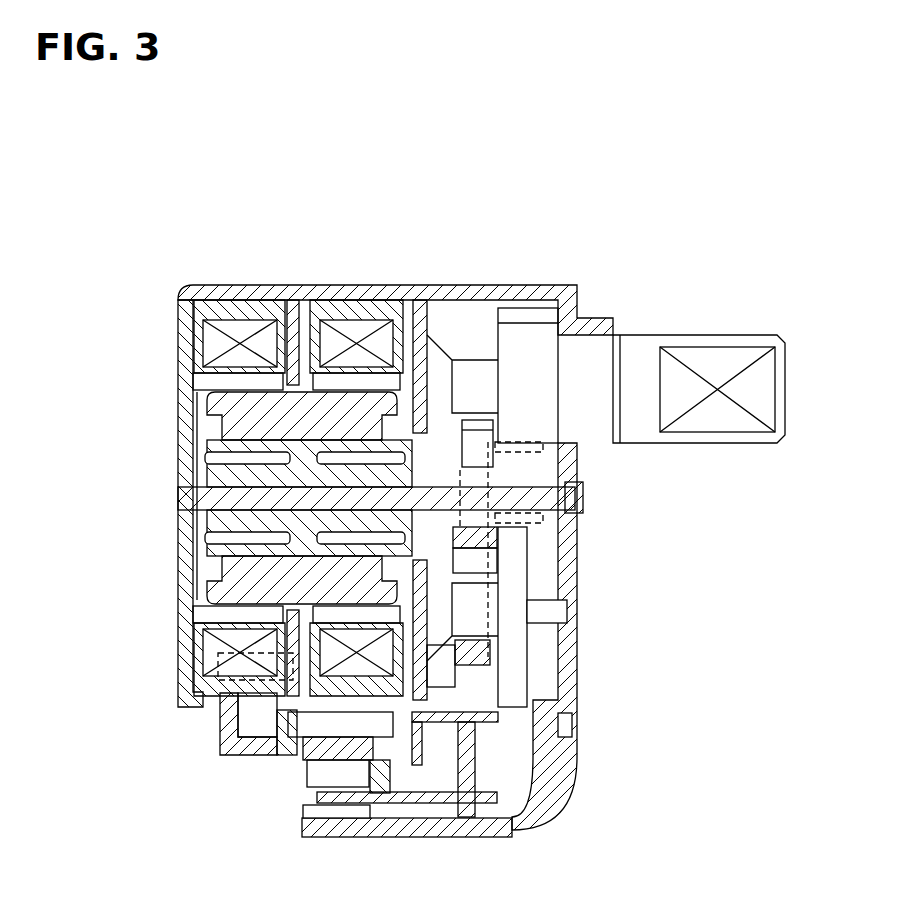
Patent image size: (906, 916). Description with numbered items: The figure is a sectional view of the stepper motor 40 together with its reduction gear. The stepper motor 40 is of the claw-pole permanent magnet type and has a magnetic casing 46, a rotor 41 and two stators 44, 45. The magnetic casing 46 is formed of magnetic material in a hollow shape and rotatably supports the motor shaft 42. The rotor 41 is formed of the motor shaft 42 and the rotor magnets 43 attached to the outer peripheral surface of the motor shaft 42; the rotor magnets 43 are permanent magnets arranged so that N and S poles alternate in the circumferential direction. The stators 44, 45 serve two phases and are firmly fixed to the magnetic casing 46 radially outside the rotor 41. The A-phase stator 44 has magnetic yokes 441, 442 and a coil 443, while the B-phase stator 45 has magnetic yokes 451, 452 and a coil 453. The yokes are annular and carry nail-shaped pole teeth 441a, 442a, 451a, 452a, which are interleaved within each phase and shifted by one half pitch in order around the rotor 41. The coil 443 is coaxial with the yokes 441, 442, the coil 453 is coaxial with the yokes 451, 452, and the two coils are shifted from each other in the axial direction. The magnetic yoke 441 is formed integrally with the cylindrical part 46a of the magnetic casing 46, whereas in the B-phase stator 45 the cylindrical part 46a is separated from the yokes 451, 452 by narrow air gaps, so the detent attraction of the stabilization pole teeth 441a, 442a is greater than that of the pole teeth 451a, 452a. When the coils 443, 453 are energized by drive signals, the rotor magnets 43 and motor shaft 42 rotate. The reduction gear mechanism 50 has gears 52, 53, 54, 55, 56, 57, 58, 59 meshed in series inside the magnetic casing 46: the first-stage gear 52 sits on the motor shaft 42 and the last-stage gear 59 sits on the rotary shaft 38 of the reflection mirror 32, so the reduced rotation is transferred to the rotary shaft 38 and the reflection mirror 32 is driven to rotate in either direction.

The reflection mirror 32 is at (638, 362).
The rotary shaft 38 is at (699, 337).
The stepper motor 40 is at (200, 590).
The rotor 41 is at (112, 410).
The motor shaft 42 is at (257, 472).
The rotor magnets 43 is at (227, 405).
The stator 44 is at (133, 228).
The magnetic yoke 441 is at (202, 382).
The pole teeth 441a is at (203, 705).
The magnetic yoke 442 is at (287, 382).
The pole teeth 442a is at (287, 620).
The coil 443 is at (263, 340).
The stator 45 is at (275, 220).
The magnetic yoke 451 is at (318, 378).
The pole teeth 451a is at (310, 615).
The magnetic yoke 452 is at (387, 370).
The pole teeth 452a is at (357, 760).
The coil 453 is at (358, 333).
The magnetic casing 46 is at (183, 560).
The cylindrical part 46a is at (295, 293).
The reduction gear mechanism 50 is at (530, 672).
The gear 52 is at (545, 528).
The gear 53 is at (517, 567).
The gear 54 is at (453, 640).
The gear 55 is at (449, 808).
The gear 56 is at (433, 760).
The gear 57 is at (488, 423).
The gear 58 is at (567, 470).
The gear 59 is at (528, 315).